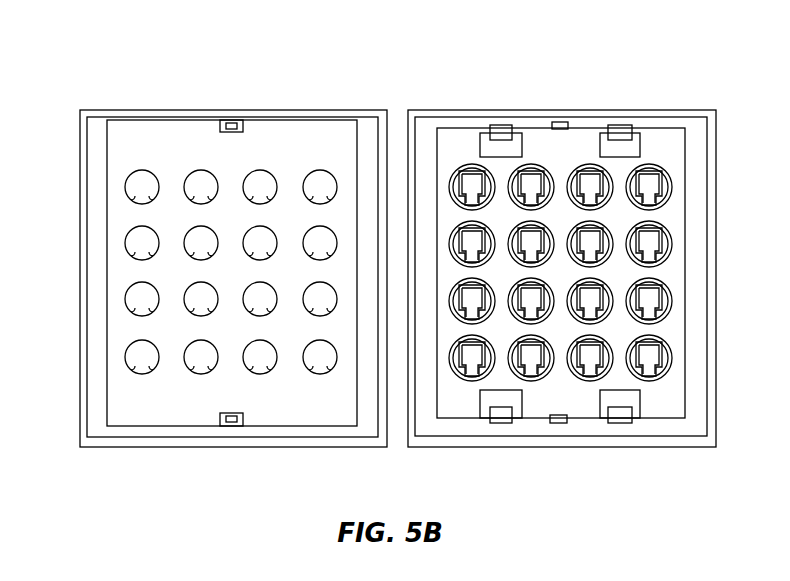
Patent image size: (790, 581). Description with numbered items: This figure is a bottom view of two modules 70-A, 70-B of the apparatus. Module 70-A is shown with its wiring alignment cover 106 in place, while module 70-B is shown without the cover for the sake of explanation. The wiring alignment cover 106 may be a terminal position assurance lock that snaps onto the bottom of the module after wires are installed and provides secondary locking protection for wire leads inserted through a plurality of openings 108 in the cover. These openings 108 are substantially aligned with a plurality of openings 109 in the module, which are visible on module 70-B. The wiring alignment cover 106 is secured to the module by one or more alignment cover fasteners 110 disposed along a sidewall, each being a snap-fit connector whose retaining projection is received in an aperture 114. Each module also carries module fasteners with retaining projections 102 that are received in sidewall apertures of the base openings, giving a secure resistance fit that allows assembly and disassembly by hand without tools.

The module 70-A is at (211, 244).
The module 70-B is at (582, 229).
The retaining projection 102 is at (501, 133).
The wiring alignment cover 106 is at (107, 135).
The opening 108 is at (320, 178).
The opening 109 is at (657, 182).
The alignment cover fastener 110 is at (560, 122).
The aperture 114 is at (232, 120).